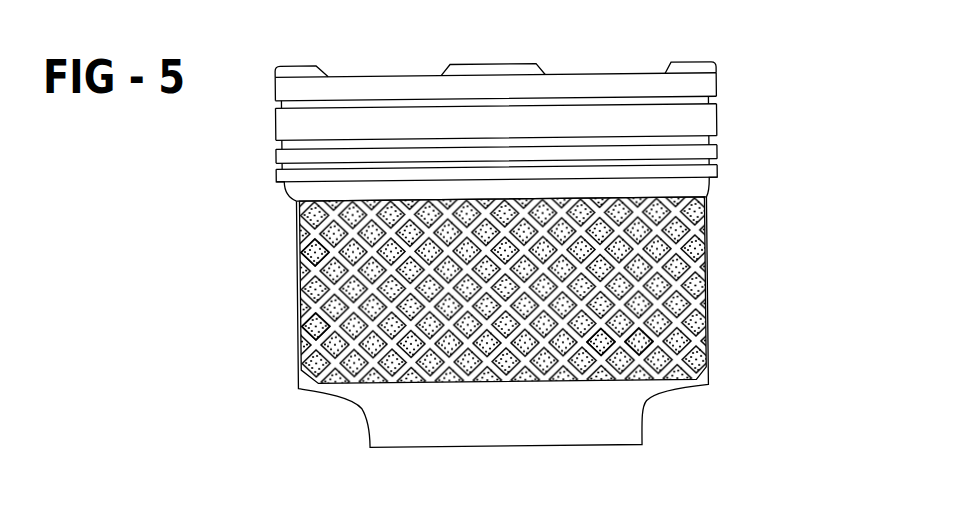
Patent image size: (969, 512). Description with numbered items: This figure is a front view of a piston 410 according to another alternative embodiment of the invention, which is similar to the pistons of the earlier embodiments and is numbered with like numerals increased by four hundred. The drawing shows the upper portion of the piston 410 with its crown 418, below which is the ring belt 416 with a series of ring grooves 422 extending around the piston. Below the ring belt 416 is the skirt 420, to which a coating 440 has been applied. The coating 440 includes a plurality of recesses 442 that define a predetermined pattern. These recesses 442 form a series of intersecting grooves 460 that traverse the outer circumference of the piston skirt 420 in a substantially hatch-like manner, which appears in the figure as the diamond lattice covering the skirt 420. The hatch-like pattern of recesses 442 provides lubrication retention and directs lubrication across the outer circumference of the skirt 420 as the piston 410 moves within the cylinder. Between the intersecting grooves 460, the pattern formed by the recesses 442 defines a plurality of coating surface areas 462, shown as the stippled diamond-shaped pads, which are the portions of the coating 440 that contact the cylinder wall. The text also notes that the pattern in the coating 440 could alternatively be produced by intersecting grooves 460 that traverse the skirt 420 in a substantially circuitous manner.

The piston 410 is at (227, 230).
The crown 418 is at (762, 74).
The ring grooves 422 is at (712, 159).
The ring belt 416 is at (780, 190).
The skirt 420 is at (732, 238).
The coating 440 is at (708, 337).
The recesses 442 is at (697, 277).
The intersecting grooves 460 is at (322, 330).
The coating surface areas 462 is at (592, 337).